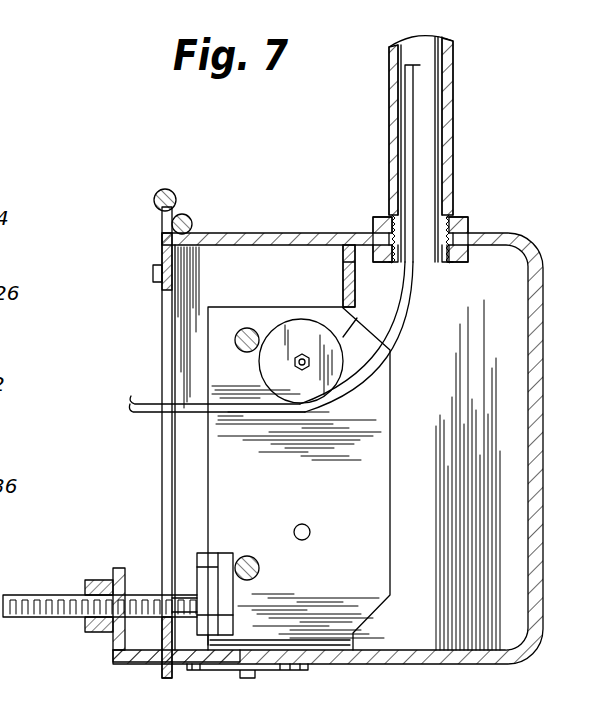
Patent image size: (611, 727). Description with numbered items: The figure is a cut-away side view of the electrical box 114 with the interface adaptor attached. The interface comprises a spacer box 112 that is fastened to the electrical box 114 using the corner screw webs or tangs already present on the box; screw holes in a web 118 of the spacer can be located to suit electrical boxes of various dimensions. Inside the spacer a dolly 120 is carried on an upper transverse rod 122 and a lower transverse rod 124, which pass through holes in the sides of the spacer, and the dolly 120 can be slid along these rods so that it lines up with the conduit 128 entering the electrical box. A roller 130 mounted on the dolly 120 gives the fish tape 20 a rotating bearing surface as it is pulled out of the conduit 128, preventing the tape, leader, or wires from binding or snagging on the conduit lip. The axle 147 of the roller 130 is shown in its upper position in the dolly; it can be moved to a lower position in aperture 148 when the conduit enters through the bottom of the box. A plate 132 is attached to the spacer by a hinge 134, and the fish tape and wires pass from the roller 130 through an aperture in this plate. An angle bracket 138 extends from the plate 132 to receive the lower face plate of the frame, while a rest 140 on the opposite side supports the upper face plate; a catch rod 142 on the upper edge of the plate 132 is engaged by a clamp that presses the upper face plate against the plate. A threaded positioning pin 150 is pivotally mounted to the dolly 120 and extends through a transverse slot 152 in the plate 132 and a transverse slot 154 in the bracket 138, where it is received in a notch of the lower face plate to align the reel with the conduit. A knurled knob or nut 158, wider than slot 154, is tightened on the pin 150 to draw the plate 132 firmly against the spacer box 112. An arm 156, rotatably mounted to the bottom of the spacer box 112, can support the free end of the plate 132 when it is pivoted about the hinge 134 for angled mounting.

The fish tape 20 is at (135, 395).
The spacer box 112 is at (258, 236).
The electrical box 114 is at (543, 300).
The web 118 is at (368, 232).
The dolly 120 is at (312, 317).
The upper transverse rod 122 is at (247, 327).
The lower transverse rod 124 is at (260, 570).
The conduit 128 is at (449, 122).
The roller 130 is at (357, 318).
The plate 132 is at (160, 287).
The hinge 134 is at (189, 214).
The angle bracket 138 is at (114, 660).
The rest 140 is at (152, 273).
The catch rod 142 is at (168, 190).
The axle 147 is at (296, 359).
The aperture 148 is at (311, 528).
The positioning pin 150 is at (22, 592).
The transverse slot 152 is at (147, 580).
The transverse slot 154 is at (110, 578).
The arm 156 is at (303, 672).
The knurled knob or nut 158 is at (88, 632).